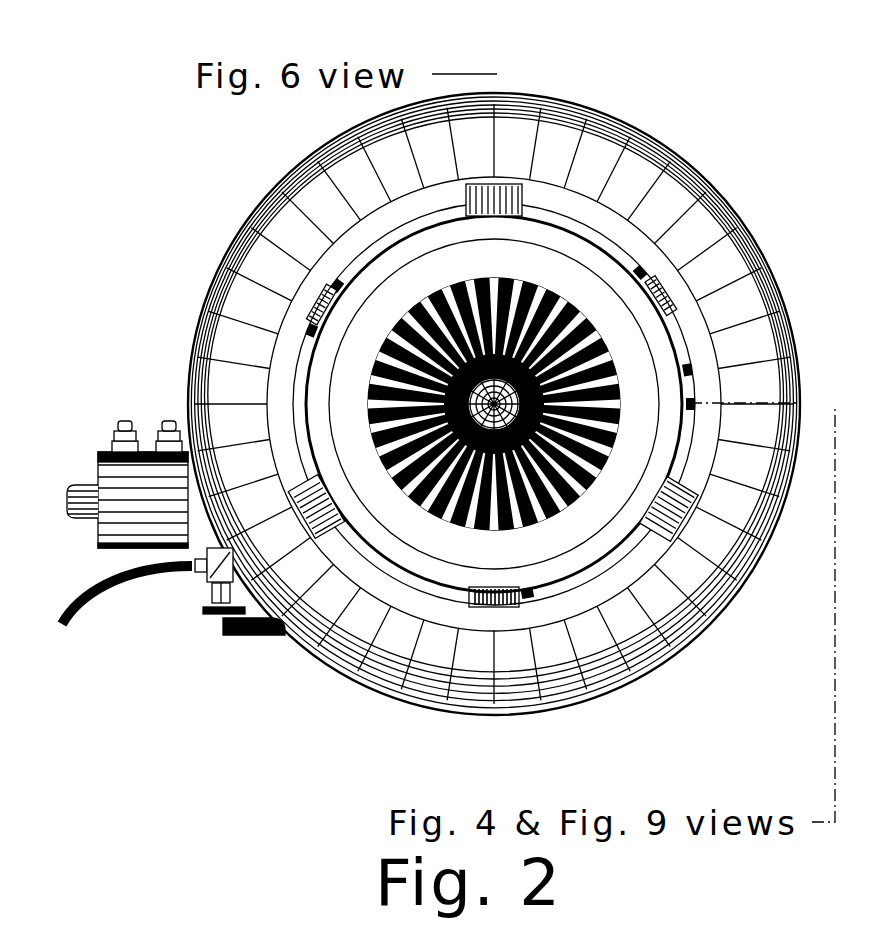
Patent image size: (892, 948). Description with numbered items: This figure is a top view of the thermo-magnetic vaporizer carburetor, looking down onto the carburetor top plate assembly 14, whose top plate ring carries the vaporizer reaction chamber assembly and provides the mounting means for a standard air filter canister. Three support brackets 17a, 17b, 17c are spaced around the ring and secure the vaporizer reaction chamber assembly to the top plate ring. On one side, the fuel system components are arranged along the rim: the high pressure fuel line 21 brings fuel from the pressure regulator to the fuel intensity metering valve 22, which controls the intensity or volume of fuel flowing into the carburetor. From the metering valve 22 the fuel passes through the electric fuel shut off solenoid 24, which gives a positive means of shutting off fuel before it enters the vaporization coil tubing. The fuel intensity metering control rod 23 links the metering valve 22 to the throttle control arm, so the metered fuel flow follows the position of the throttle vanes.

The carburetor top plate assembly 14 is at (580, 278).
The thermo magnetic chamber support bracket 17a is at (504, 185).
The thermo magnetic chamber support bracket 17b is at (740, 578).
The thermo magnetic chamber support bracket 17c is at (325, 530).
The high pressure fuel line 21 is at (73, 628).
The fuel intensity metering valve 22 is at (207, 582).
The fuel intensity metering control rod 23 is at (247, 636).
The fuel shut off solenoid 24 is at (150, 452).